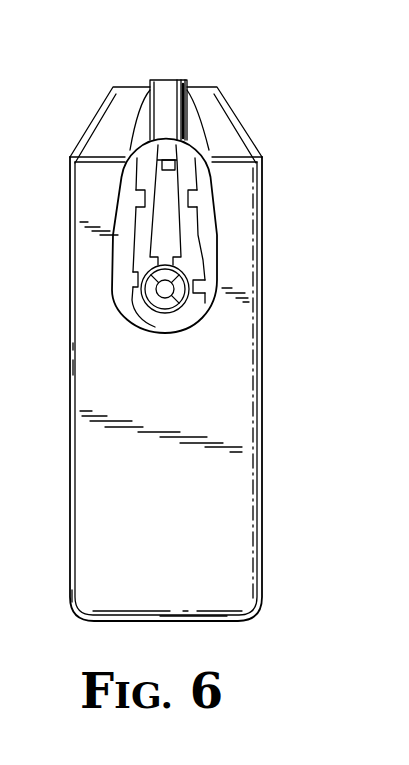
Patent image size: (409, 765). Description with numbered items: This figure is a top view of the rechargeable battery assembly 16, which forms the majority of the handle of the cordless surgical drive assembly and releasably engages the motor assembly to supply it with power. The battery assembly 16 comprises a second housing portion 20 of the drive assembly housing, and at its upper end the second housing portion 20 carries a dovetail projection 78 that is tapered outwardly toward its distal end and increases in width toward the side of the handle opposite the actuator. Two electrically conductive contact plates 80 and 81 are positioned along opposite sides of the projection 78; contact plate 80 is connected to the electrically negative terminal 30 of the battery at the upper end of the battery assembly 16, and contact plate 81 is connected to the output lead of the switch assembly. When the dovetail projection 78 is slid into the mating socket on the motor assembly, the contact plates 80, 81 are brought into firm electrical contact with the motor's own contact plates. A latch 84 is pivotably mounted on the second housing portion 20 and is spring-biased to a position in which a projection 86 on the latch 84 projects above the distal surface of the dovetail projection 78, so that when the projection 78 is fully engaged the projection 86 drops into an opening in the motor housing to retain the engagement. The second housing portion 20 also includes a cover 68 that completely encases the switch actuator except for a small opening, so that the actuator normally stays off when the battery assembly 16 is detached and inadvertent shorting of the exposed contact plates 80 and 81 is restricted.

The rechargeable battery assembly 16 is at (268, 345).
The second housing portion 20 is at (248, 431).
The electrically negative terminal 30 is at (165, 298).
The cover 68 is at (181, 82).
The dovetail projection 78 is at (215, 232).
The contact plate 80 is at (197, 198).
The contact plate 81 is at (136, 198).
The latch 84 is at (170, 235).
The projection 86 is at (170, 165).